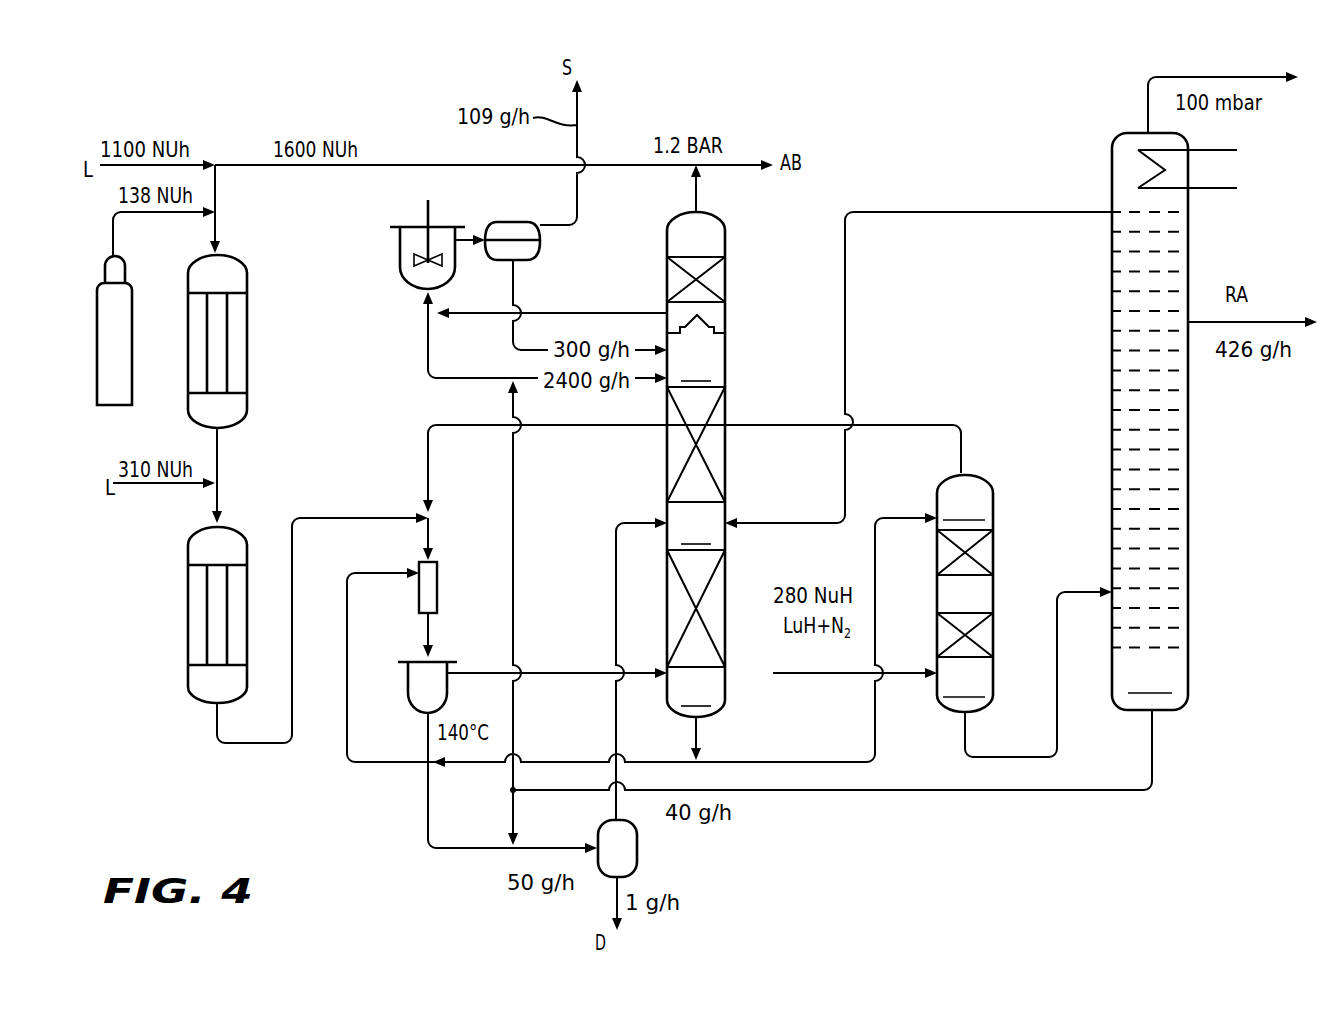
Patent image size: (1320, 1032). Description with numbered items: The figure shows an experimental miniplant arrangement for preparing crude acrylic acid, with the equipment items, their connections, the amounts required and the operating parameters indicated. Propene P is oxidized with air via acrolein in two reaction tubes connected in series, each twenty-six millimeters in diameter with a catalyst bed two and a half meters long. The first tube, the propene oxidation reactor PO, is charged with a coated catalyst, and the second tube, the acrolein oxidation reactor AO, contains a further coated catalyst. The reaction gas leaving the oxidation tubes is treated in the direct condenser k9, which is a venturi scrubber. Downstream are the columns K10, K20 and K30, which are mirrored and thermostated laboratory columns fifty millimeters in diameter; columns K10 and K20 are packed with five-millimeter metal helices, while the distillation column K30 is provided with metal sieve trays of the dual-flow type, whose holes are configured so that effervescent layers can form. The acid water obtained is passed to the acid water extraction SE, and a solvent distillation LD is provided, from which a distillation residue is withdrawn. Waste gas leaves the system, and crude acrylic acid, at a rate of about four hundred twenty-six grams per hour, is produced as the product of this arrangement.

The propene P is at (122, 358).
The propene oxidation reaction tube PO is at (232, 341).
The acrolein oxidation reaction tube AO is at (233, 615).
The acid water extraction SE is at (427, 239).
The direct condenser k9 is at (442, 587).
The first column K10 is at (687, 482).
The second column K20 is at (958, 609).
The distillation column K30 is at (1172, 440).
The solvent distillation LD is at (628, 862).